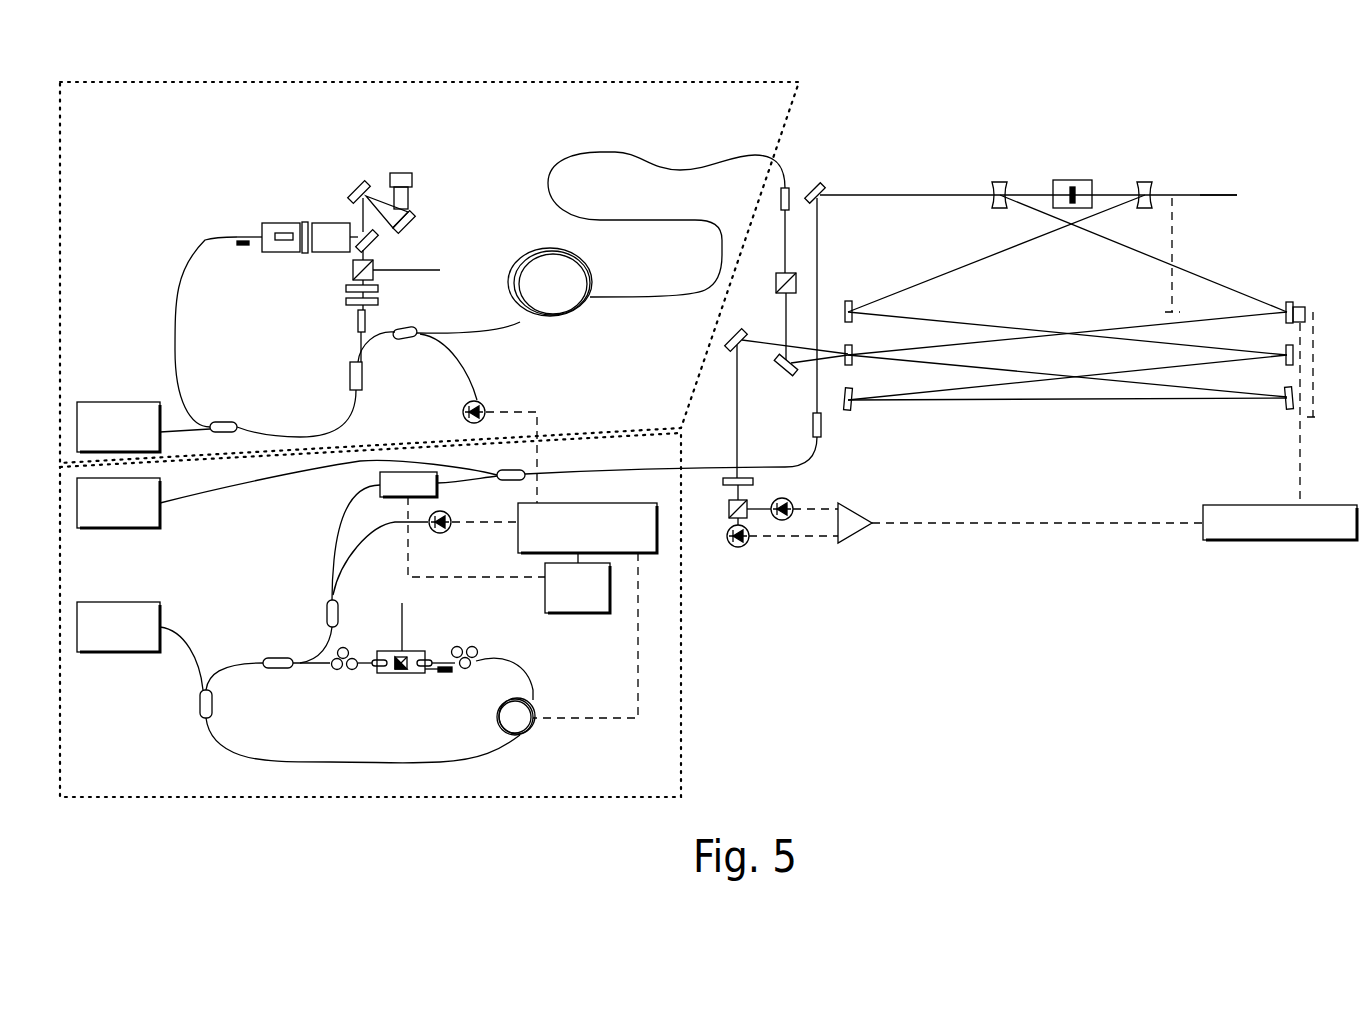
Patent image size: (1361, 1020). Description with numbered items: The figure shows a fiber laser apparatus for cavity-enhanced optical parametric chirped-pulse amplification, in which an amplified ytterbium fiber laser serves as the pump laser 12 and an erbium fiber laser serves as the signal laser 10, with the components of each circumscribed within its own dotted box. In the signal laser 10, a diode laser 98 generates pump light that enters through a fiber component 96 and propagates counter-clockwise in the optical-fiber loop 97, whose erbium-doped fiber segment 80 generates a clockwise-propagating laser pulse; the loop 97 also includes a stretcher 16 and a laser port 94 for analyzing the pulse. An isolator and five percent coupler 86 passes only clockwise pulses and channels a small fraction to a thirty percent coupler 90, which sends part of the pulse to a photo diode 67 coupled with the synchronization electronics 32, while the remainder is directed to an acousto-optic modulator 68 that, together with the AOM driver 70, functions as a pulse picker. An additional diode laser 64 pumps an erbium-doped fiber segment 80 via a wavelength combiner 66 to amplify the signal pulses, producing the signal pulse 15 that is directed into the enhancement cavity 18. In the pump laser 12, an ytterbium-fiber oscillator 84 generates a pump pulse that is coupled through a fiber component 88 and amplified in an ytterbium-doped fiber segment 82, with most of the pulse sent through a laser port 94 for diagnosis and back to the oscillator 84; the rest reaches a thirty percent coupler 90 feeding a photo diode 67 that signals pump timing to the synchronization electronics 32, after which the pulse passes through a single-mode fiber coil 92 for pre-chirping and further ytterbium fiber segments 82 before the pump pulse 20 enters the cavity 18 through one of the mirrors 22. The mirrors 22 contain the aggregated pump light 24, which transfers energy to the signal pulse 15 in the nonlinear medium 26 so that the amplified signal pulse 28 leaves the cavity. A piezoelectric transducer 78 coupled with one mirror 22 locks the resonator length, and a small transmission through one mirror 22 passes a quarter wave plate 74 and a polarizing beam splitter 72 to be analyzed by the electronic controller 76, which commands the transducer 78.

The signal laser 10 is at (683, 640).
The pump laser 12 is at (787, 118).
The signal pulse 15 is at (818, 210).
The stretcher 16 is at (497, 713).
The enhancement cavity 18 is at (1004, 414).
The pump pulse 20 is at (785, 327).
The mirrors 22 is at (990, 187).
The aggregated pump light 24 is at (973, 321).
The nonlinear medium 26 is at (1053, 183).
The amplified signal pulse 28 is at (1212, 197).
The synchronization electronics 32 is at (600, 503).
The diode laser 64 is at (113, 402).
The wavelength combiner 66 is at (513, 480).
The photo diode 67 is at (480, 400).
The acousto-optic modulator 68 is at (380, 475).
The AOM driver 70 is at (582, 613).
The polarizing beam splitter 72 is at (729, 507).
The quarter wave plate 74 is at (753, 482).
The electronic controller 76 is at (1277, 541).
The piezoelectric transducer 78 is at (1308, 310).
The erbium-doped fiber segment 80 is at (582, 472).
The ytterbium-doped fiber segment 82 is at (308, 436).
The ytterbium-fiber oscillator 84 is at (307, 193).
The isolator and 5% coupler 86 is at (273, 658).
The wavelength division multiplexer 88 is at (350, 375).
The 30% coupler 90 is at (405, 340).
The single-mode fiber coil 92 is at (508, 263).
The laser port 94 is at (340, 271).
The wavelength division multiplexer 96 is at (200, 698).
The optical-fiber loop 97 is at (169, 722).
The diode laser 98 is at (115, 602).